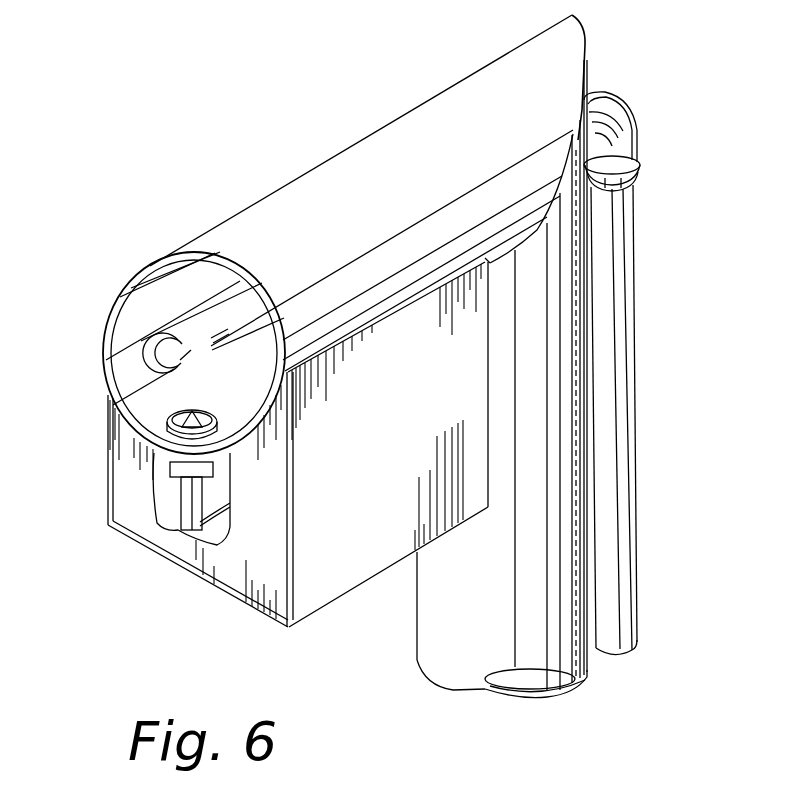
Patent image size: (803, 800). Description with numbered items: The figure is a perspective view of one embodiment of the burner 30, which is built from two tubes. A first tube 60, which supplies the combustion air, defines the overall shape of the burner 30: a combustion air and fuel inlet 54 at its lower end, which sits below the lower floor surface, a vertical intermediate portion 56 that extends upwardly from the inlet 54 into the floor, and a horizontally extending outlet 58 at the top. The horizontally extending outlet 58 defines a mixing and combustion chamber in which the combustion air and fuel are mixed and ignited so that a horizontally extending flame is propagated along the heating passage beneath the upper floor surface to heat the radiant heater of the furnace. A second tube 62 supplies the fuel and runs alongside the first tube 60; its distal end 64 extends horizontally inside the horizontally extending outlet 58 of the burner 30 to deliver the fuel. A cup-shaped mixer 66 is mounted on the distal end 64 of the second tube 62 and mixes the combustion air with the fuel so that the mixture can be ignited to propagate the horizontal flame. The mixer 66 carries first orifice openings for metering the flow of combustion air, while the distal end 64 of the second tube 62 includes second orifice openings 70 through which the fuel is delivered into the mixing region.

The burner 30 is at (262, 96).
The combustion air and fuel inlet 54 is at (563, 712).
The vertical intermediate portion 56 is at (450, 621).
The horizontally extending outlet 58 is at (516, 18).
The first tube 60 is at (540, 463).
The second tube 62 is at (608, 228).
The distal end 64 is at (207, 331).
The mixer 66 is at (130, 346).
The second orifice openings 70 is at (135, 402).